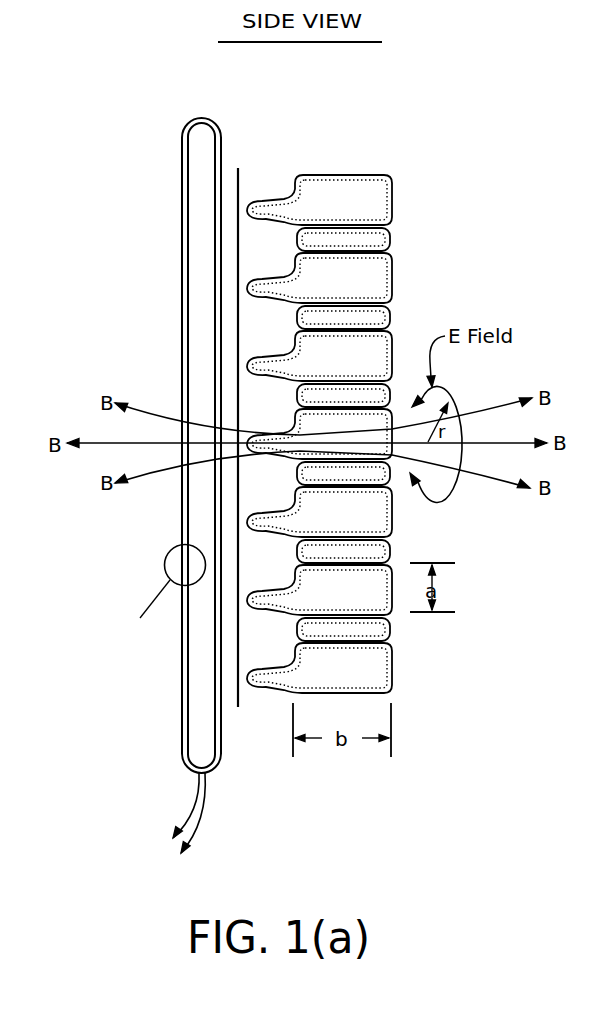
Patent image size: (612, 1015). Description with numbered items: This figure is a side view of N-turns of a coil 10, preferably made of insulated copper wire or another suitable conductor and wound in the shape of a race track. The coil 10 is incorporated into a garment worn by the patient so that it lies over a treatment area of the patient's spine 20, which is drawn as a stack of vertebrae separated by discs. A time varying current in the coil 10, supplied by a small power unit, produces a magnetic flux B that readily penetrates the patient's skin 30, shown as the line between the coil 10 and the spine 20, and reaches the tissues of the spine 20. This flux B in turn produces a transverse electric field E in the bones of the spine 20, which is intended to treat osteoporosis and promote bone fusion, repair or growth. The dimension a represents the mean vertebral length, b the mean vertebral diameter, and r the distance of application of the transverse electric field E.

The coil 10 is at (178, 239).
The spine 20 is at (338, 166).
The skin 30 is at (252, 163).